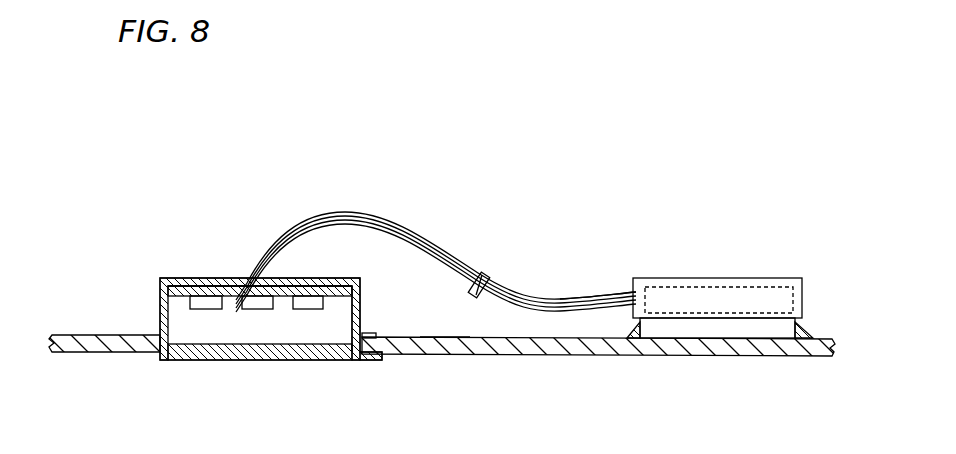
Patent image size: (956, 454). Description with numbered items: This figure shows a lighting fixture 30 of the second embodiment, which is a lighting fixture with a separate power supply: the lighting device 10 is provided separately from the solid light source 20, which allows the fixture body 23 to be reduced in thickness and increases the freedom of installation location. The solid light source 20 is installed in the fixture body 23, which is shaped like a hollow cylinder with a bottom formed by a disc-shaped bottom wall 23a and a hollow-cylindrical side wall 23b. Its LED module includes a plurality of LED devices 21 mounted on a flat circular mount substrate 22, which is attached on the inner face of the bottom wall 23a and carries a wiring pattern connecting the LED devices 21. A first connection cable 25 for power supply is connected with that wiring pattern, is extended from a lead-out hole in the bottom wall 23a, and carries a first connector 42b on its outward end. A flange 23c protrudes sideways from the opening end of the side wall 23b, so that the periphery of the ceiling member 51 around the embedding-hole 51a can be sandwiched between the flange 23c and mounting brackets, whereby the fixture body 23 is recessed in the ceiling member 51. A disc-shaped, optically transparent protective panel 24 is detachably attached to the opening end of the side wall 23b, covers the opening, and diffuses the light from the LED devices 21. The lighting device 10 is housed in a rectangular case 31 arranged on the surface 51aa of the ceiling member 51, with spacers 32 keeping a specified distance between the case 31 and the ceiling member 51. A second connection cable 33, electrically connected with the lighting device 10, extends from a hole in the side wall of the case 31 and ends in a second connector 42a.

The lighting device 10 is at (690, 305).
The solid light source 20 is at (180, 288).
The LED devices 21 is at (307, 305).
The mount substrate 22 is at (230, 290).
The fixture body 23 is at (160, 300).
The bottom wall 23a is at (307, 285).
The side wall 23b is at (360, 292).
The flange 23c is at (375, 358).
The protective panel 24 is at (187, 360).
The first connection cable 25 is at (357, 211).
The lighting fixture 30 is at (599, 180).
The case 31 is at (745, 278).
The spacer 32 is at (808, 330).
The second connection cable 33 is at (557, 302).
The second connector 42a is at (488, 284).
The first connector 42b is at (478, 277).
The ceiling member 51 is at (555, 345).
The embedding-hole 51a is at (370, 336).
The surface 51aa is at (445, 337).